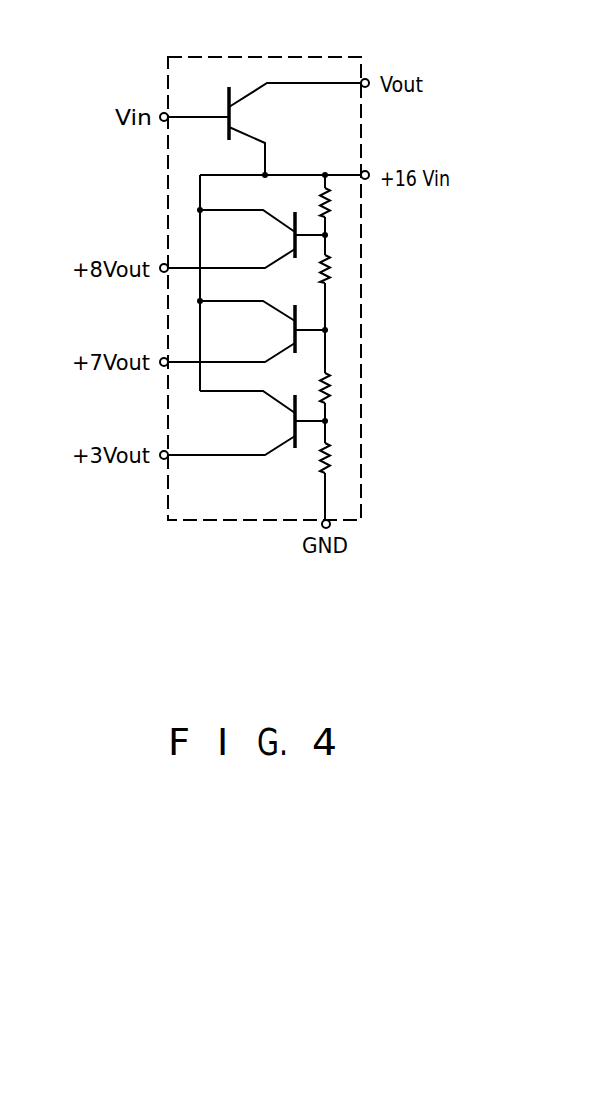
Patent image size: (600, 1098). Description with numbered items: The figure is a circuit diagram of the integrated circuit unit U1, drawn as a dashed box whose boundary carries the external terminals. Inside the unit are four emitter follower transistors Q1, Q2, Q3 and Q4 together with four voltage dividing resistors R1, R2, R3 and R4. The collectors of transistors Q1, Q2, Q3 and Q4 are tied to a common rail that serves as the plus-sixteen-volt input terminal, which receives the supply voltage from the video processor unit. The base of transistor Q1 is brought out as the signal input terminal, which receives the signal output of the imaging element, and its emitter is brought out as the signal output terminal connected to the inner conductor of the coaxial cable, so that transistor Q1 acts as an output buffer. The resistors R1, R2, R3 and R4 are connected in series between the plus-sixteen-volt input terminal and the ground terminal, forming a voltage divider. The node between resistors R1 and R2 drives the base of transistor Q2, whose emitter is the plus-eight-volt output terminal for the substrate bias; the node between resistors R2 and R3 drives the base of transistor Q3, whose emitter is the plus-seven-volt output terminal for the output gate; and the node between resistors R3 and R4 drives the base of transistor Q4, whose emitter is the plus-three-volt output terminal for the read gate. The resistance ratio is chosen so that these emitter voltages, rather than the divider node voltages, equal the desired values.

The integrated circuit unit U1 is at (278, 56).
The emitter follower transistor Q1 is at (223, 110).
The emitter follower transistor Q2 is at (291, 222).
The emitter follower transistor Q3 is at (291, 316).
The emitter follower transistor Q4 is at (292, 402).
The voltage dividing resistor R1 is at (334, 203).
The voltage dividing resistor R2 is at (334, 268).
The voltage dividing resistor R3 is at (334, 387).
The voltage dividing resistor R4 is at (334, 458).